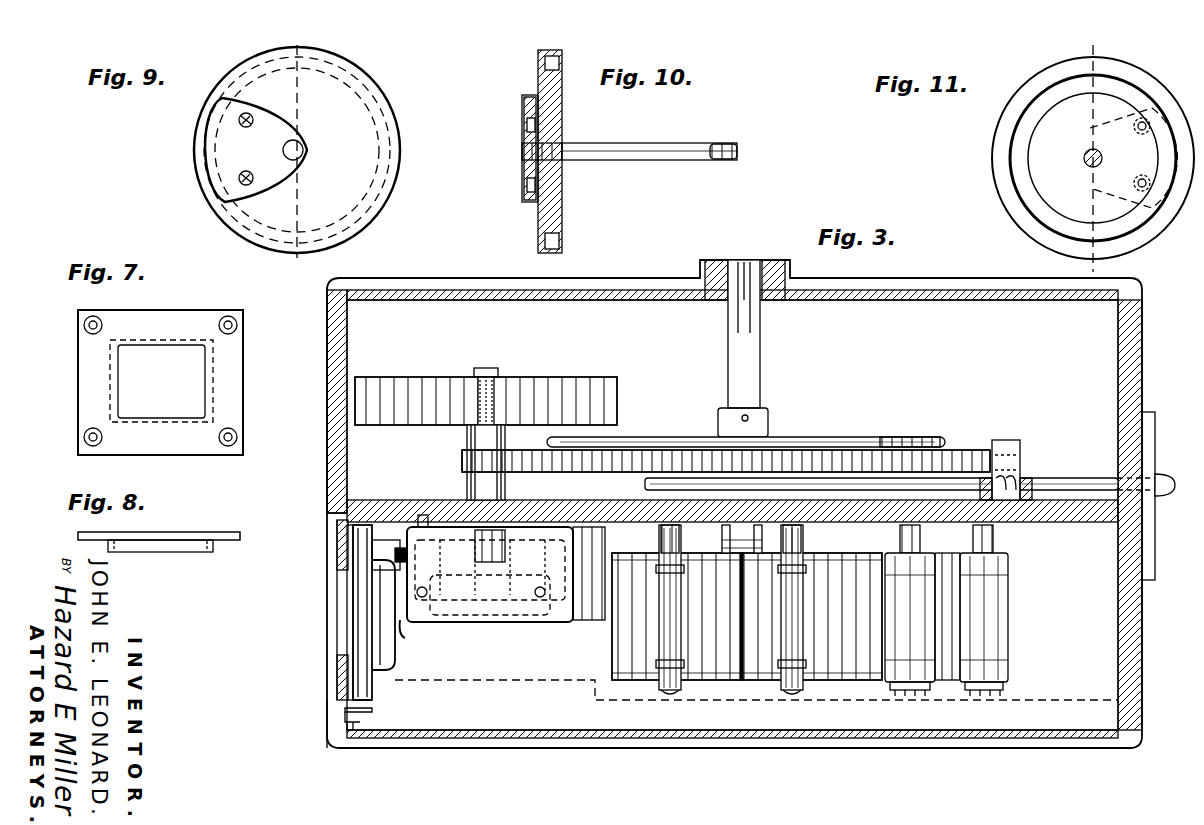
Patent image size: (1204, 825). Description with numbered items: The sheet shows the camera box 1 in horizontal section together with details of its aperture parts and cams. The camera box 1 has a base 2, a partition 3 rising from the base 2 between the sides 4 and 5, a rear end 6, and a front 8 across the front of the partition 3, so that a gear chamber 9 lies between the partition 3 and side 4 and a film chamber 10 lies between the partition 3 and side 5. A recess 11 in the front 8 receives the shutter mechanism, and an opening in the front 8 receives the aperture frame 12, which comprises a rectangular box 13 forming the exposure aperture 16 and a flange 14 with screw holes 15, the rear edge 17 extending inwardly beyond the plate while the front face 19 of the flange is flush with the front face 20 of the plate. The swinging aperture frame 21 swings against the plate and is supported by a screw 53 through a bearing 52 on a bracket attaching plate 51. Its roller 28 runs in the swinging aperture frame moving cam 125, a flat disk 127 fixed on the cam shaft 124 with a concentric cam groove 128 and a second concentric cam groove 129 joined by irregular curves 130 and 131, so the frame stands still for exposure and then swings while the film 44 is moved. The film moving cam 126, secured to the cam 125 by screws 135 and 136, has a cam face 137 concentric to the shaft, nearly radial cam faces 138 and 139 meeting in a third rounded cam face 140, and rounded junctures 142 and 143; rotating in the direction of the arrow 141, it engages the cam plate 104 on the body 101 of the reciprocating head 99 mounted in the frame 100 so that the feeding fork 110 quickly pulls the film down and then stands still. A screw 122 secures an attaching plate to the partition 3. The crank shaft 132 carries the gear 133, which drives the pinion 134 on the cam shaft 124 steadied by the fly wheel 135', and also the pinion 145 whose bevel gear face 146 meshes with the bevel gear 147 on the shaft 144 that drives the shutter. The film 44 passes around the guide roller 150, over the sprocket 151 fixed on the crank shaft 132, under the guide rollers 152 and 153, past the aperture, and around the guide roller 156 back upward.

In FIG. 3, the camera box 1 is at (1148, 372).
In FIG. 3, the base 2 is at (1108, 652).
In FIG. 3, the partition 3 is at (1038, 527).
In FIG. 3, the side 4 is at (905, 302).
In FIG. 3, the side 5 is at (613, 473).
In FIG. 3, the rear end 6 is at (1118, 392).
In FIG. 7, the front 8 is at (194, 258).
In FIG. 3, the front 8 is at (327, 430).
In FIG. 9, the gear chamber 9 is at (448, 54).
In FIG. 3, the gear chamber 9 is at (1105, 325).
In FIG. 9, the film chamber 10 is at (309, 268).
In FIG. 11, the film chamber 10 is at (1088, 270).
In FIG. 3, the film chamber 10 is at (1108, 608).
In FIG. 10, the recess 11 is at (697, 187).
In FIG. 3, the recess 11 is at (330, 626).
In FIG. 7, the aperture frame 12 is at (245, 396).
In FIG. 8, the aperture frame 12 is at (162, 532).
In FIG. 3, the aperture frame 12 is at (334, 560).
In FIG. 7, the rectangular box 13 is at (120, 414).
In FIG. 7, the flange 14 is at (188, 447).
In FIG. 7, the screw holes 15 is at (86, 323).
In FIG. 7, the exposure aperture 16 is at (195, 390).
In FIG. 3, the exposure aperture 16 is at (335, 605).
In FIG. 8, the rear edge 17 is at (138, 552).
In FIG. 8, the front face 19 is at (224, 532).
In FIG. 3, the front face 20 is at (335, 655).
In FIG. 3, the swinging aperture frame 21 is at (368, 690).
In FIG. 9, the roller 28 is at (198, 152).
In FIG. 3, the film 44 is at (612, 655).
In FIG. 3, the bracket attaching plate 51 is at (360, 727).
In FIG. 3, the bearing 52 is at (372, 710).
In FIG. 3, the screw 53 is at (362, 720).
In FIG. 3, the reciprocating head 99 is at (400, 625).
In FIG. 3, the frame 100 is at (570, 628).
In FIG. 3, the body 101 is at (490, 622).
In FIG. 3, the cam plate 104 is at (385, 557).
In FIG. 3, the feeding fork 110 is at (384, 668).
In FIG. 3, the screw 122 is at (425, 516).
In FIG. 9, the cam shaft 124 is at (348, 84).
In FIG. 10, the cam shaft 124 is at (618, 143).
In FIG. 11, the cam shaft 124 is at (1103, 157).
In FIG. 3, the cam shaft 124 is at (480, 392).
In FIG. 9, the swinging aperture frame moving cam 125 is at (392, 206).
In FIG. 10, the swinging aperture frame moving cam 125 is at (565, 219).
In FIG. 11, the swinging aperture frame moving cam 125 is at (1000, 205).
In FIG. 3, the swinging aperture frame moving cam 125 is at (340, 545).
In FIG. 9, the film moving cam 126 is at (272, 115).
In FIG. 10, the film moving cam 126 is at (520, 107).
In FIG. 11, the film moving cam 126 is at (1100, 178).
In FIG. 3, the film moving cam 126 is at (370, 575).
In FIG. 9, the flat disk 127 is at (350, 226).
In FIG. 10, the flat disk 127 is at (540, 245).
In FIG. 9, the concentric cam groove 128 is at (200, 115).
In FIG. 11, the second concentric cam groove 129 is at (1012, 158).
In FIG. 11, the irregular curve 130 is at (1093, 84).
In FIG. 11, the irregular curve 131 is at (1088, 228).
In FIG. 3, the crank shaft 132 is at (760, 386).
In FIG. 3, the gear 133 is at (792, 447).
In FIG. 3, the pinion 134 is at (462, 457).
In FIG. 9, the screw 135 is at (265, 102).
In FIG. 10, the screw 135 is at (502, 122).
In FIG. 3, the fly wheel 135' is at (486, 387).
In FIG. 9, the screw 136 is at (254, 178).
In FIG. 10, the screw 136 is at (522, 186).
In FIG. 9, the cam face 137 is at (208, 163).
In FIG. 9, the cam face 138 is at (290, 122).
In FIG. 9, the cam face 139 is at (278, 187).
In FIG. 9, the third rounded cam face 140 is at (306, 150).
In FIG. 9, the arrow 141 is at (181, 176).
In FIG. 9, the rounded juncture 142 is at (228, 93).
In FIG. 9, the juncture 143 is at (226, 200).
In FIG. 3, the shaft 144 is at (1080, 487).
In FIG. 3, the pinion 145 is at (990, 445).
In FIG. 3, the bevel gear face 146 is at (1032, 468).
In FIG. 3, the bevel gear 147 is at (1030, 480).
In FIG. 3, the guide roller 150 is at (925, 688).
In FIG. 3, the sprocket 151 is at (830, 684).
In FIG. 3, the guide roller 152 is at (660, 682).
In FIG. 3, the guide roller 153 is at (790, 684).
In FIG. 3, the guide roller 156 is at (1012, 680).